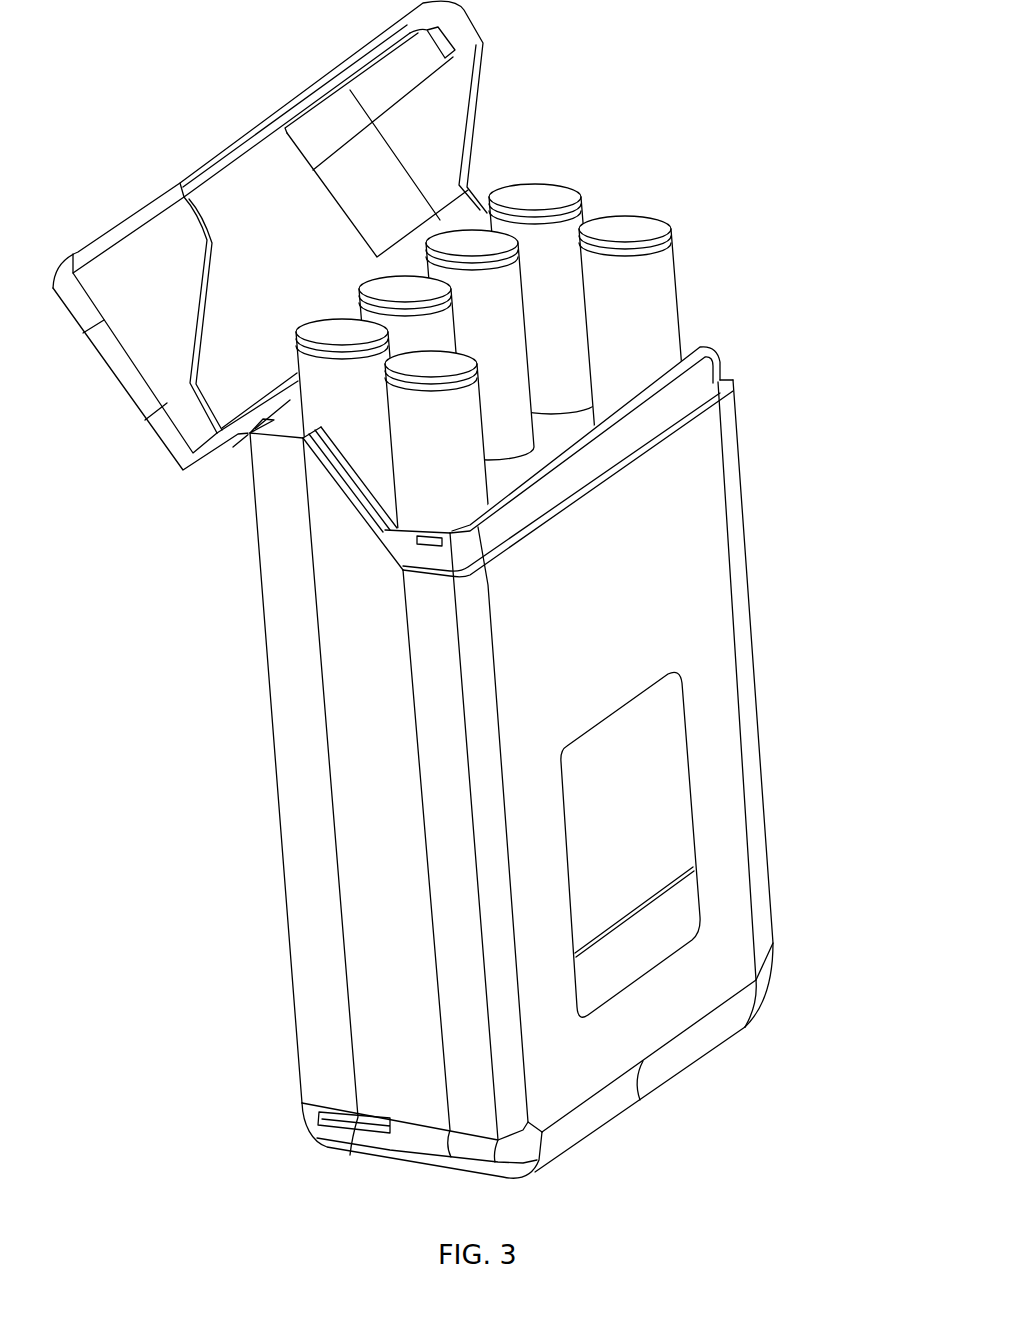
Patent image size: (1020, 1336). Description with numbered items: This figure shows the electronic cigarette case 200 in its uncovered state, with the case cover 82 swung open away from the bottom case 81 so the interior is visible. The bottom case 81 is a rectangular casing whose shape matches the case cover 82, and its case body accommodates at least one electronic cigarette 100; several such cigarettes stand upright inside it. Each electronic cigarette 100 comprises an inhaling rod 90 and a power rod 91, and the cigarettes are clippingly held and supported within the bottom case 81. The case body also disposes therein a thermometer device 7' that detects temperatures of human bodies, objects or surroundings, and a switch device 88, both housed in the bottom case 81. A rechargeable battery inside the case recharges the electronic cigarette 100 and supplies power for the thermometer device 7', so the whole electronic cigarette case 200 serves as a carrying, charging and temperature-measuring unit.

The case cover 82 is at (440, 120).
The bottom case 81 is at (545, 764).
The electronic cigarette case 200 is at (358, 763).
The electronic cigarette 100 is at (750, 104).
The inhaling rod 90 is at (547, 198).
The power rod 91 is at (640, 231).
The thermometer device 7' is at (718, 832).
The switch device 88 is at (656, 900).